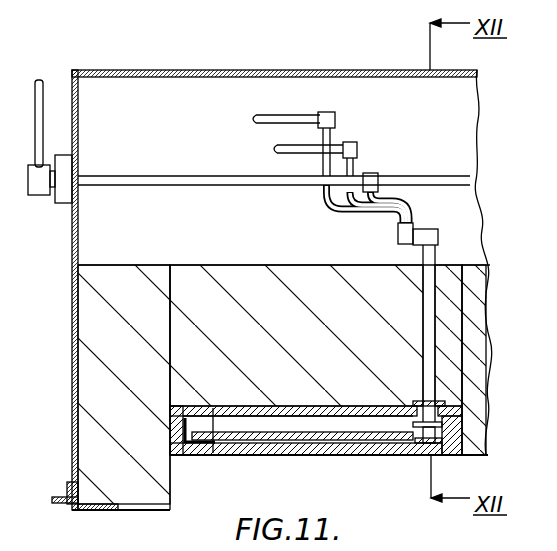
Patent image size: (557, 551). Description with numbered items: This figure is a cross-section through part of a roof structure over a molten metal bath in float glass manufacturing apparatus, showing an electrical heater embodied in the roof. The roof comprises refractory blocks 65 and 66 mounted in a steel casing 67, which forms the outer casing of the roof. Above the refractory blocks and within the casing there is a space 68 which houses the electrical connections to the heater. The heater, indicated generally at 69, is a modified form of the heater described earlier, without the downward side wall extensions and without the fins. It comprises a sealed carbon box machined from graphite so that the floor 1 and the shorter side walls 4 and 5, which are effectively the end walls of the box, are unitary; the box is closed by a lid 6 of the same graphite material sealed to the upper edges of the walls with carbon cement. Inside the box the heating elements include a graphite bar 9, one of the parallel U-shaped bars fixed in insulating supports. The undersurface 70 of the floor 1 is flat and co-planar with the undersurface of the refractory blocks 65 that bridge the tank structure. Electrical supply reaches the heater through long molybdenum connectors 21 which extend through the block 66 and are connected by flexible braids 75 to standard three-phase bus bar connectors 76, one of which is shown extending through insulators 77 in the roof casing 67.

The floor 1 is at (270, 458).
The shorter side wall 4 is at (455, 430).
The shorter side wall 5 is at (177, 440).
The lid 6 is at (213, 412).
The graphite bar 9 is at (312, 441).
The molybdenum connector 21 is at (425, 258).
The refractory block 65 is at (477, 288).
The refractory block 66 is at (283, 273).
The steel casing 67 is at (172, 70).
The space 68 is at (420, 121).
The heater 69 is at (352, 458).
The undersurface 70 is at (245, 456).
The flexible braid 75 is at (330, 199).
The bus bar connector 76 is at (279, 118).
The insulator 77 is at (62, 192).